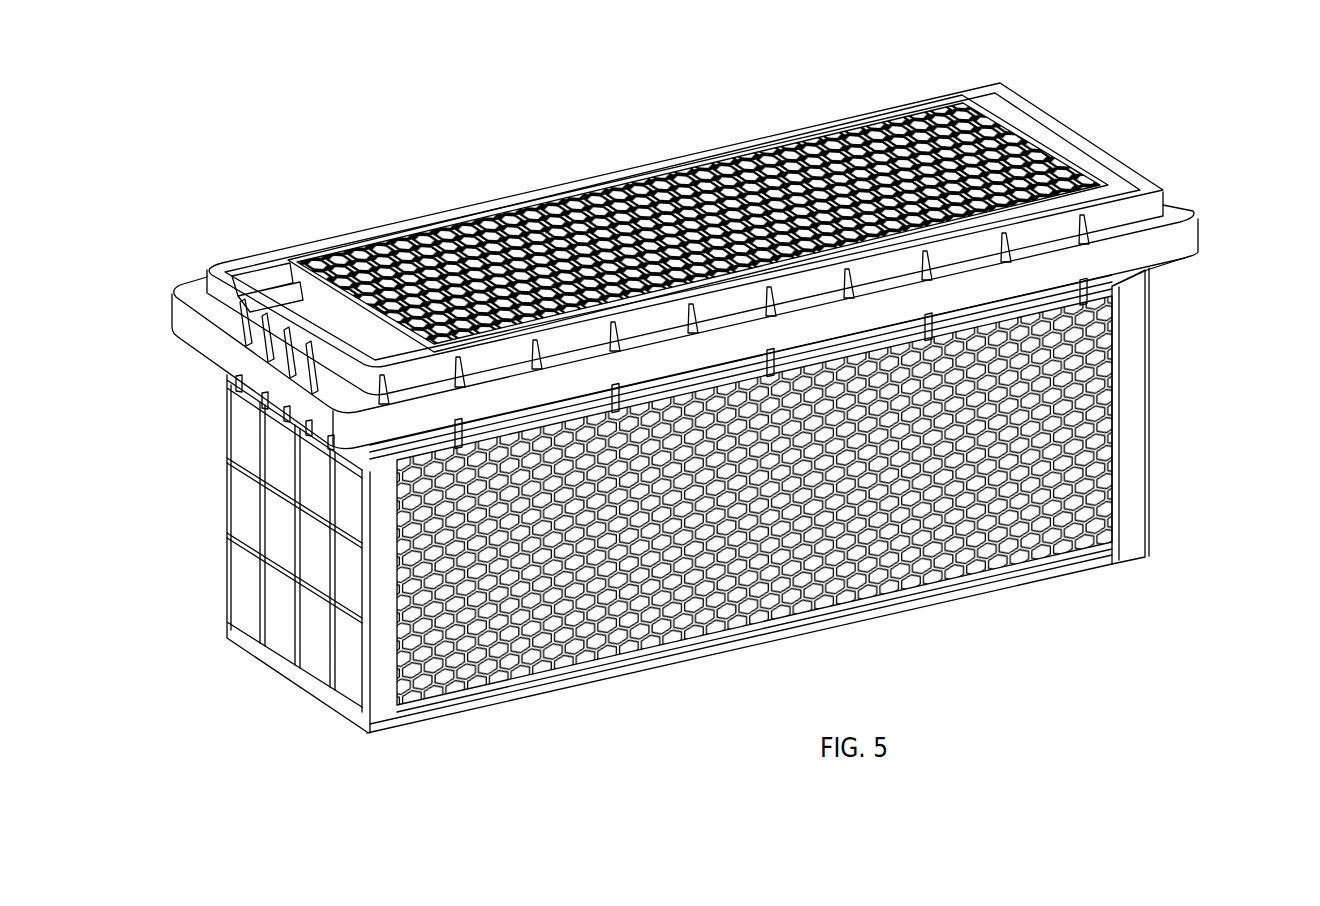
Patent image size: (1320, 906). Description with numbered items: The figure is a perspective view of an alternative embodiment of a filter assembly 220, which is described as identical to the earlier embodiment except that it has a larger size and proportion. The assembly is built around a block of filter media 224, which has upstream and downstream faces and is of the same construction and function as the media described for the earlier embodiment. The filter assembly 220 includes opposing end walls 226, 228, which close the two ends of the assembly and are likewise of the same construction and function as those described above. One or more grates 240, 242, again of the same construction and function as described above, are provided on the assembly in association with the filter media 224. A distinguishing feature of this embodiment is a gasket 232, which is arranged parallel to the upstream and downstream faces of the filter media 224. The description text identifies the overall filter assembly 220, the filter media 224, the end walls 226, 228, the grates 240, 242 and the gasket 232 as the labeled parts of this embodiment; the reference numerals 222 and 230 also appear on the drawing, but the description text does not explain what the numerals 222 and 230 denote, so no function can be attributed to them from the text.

The filter assembly 220 is at (1172, 132).
The filter element body 222 is at (192, 615).
The filter media 224 is at (720, 622).
The end wall 226 is at (383, 690).
The end wall 228 is at (1138, 415).
The mounting flange 230 is at (1200, 258).
The gasket 232 is at (1200, 225).
The grate 240 is at (452, 703).
The grate 242 is at (748, 140).